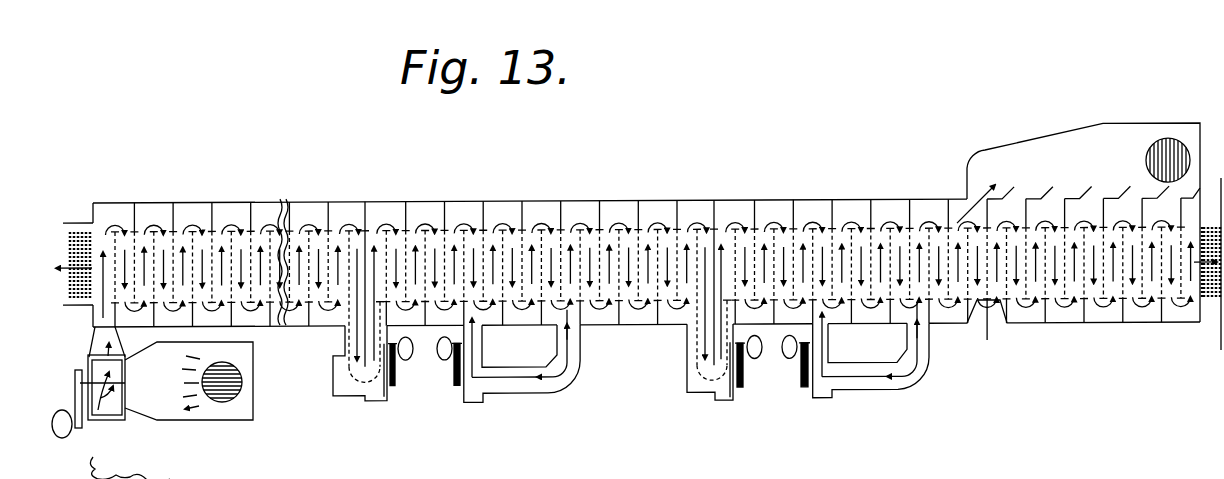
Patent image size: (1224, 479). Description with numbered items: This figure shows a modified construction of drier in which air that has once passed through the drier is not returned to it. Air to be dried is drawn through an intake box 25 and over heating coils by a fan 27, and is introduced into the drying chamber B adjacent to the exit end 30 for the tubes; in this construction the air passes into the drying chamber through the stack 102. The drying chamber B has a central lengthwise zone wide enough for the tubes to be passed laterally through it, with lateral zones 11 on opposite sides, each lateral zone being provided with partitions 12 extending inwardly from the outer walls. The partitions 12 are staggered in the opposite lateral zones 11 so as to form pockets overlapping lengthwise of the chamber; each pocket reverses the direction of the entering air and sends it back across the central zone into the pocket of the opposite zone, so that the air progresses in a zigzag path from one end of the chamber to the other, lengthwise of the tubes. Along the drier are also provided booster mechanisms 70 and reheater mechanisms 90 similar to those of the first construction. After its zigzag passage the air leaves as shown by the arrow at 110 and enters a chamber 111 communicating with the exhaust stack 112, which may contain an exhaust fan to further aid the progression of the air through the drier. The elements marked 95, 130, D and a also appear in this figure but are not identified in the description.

The exit end 30 is at (66, 242).
The partitions 12 is at (250, 232).
The lateral zones 11 is at (465, 214).
The drying chamber B is at (558, 197).
The booster mechanisms 70 is at (343, 341).
The reheater mechanisms 90 is at (528, 393).
The damper 95 is at (457, 368).
The fan 27 is at (88, 366).
The intake box 25 is at (240, 418).
The stack 102 is at (240, 395).
The air exit 110 is at (987, 188).
The dampers 130 is at (1008, 192).
The chamber 111 is at (1151, 224).
The exhaust stack 112 is at (1163, 140).
The damper D is at (976, 364).
The outlet a is at (1142, 324).